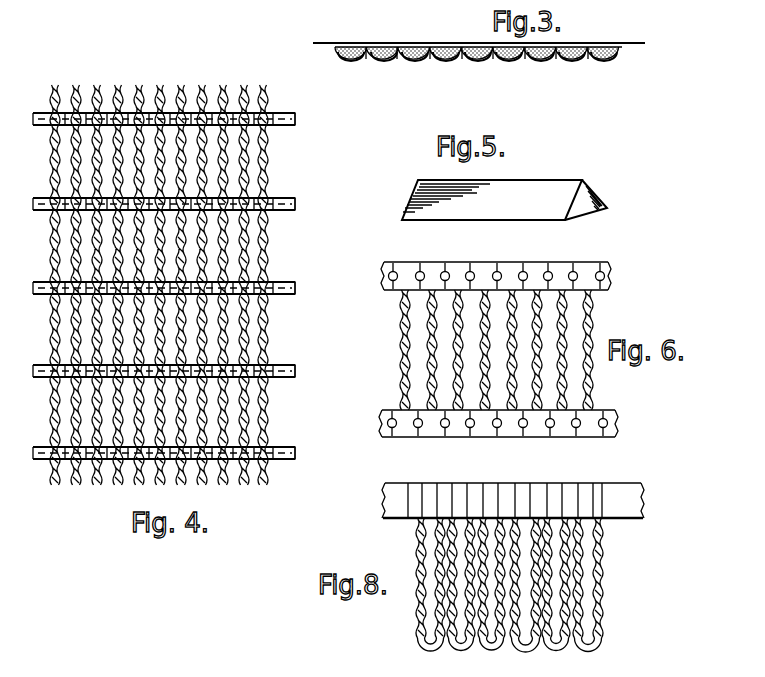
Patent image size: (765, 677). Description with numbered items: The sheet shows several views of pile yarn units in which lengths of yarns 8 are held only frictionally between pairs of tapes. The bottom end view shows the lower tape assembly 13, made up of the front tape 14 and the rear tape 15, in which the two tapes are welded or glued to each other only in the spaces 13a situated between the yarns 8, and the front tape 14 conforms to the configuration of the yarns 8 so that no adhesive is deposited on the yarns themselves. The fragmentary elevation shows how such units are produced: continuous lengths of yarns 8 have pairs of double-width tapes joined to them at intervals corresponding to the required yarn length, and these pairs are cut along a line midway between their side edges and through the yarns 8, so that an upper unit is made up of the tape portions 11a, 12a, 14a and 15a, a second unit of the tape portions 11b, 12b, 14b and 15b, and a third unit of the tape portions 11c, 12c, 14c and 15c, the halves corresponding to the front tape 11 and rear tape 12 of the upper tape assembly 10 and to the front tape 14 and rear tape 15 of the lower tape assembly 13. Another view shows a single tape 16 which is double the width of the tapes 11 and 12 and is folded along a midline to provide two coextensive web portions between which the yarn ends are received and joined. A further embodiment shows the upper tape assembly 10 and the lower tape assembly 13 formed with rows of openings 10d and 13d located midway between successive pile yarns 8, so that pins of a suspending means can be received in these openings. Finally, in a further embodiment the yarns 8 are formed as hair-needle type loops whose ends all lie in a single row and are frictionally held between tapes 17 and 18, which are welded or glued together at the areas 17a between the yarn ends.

In FIG. 3, the yarns 8 is at (440, 57).
In FIG. 4, the yarns 8 is at (76, 170).
In FIG. 6, the yarns 8 is at (432, 318).
In FIG. 8, the yarns 8 is at (578, 649).
In FIG. 6, the upper tape assembly 10 is at (564, 264).
In FIG. 6, the openings 10d is at (468, 272).
In FIG. 4, the front tape 11 is at (260, 127).
In FIG. 4, the tape portion 11a is at (260, 210).
In FIG. 4, the tape portion 11b is at (260, 294).
In FIG. 4, the tape portion 11c is at (260, 379).
In FIG. 4, the rear tape 12 is at (285, 125).
In FIG. 4, the tape portion 12a is at (288, 209).
In FIG. 4, the tape portion 12b is at (290, 293).
In FIG. 4, the tape portion 12c is at (290, 378).
In FIG. 6, the lower tape assembly 13 is at (600, 412).
In FIG. 3, the spaces 13a is at (551, 58).
In FIG. 6, the openings 13d is at (443, 425).
In FIG. 3, the front tape 14 is at (361, 57).
In FIG. 4, the front tape 14 is at (266, 201).
In FIG. 4, the tape portion 14a is at (268, 286).
In FIG. 4, the tape portion 14b is at (270, 368).
In FIG. 4, the tape portion 14c is at (270, 450).
In FIG. 3, the rear tape 15 is at (340, 42).
In FIG. 4, the rear tape 15 is at (292, 200).
In FIG. 4, the tape portion 15a is at (295, 285).
In FIG. 4, the tape portion 15b is at (297, 367).
In FIG. 4, the tape portion 15c is at (297, 449).
In FIG. 5, the single tape 16 is at (537, 193).
In FIG. 8, the tape 17 is at (548, 486).
In FIG. 8, the areas 17a is at (479, 490).
In FIG. 8, the tape 18 is at (622, 503).